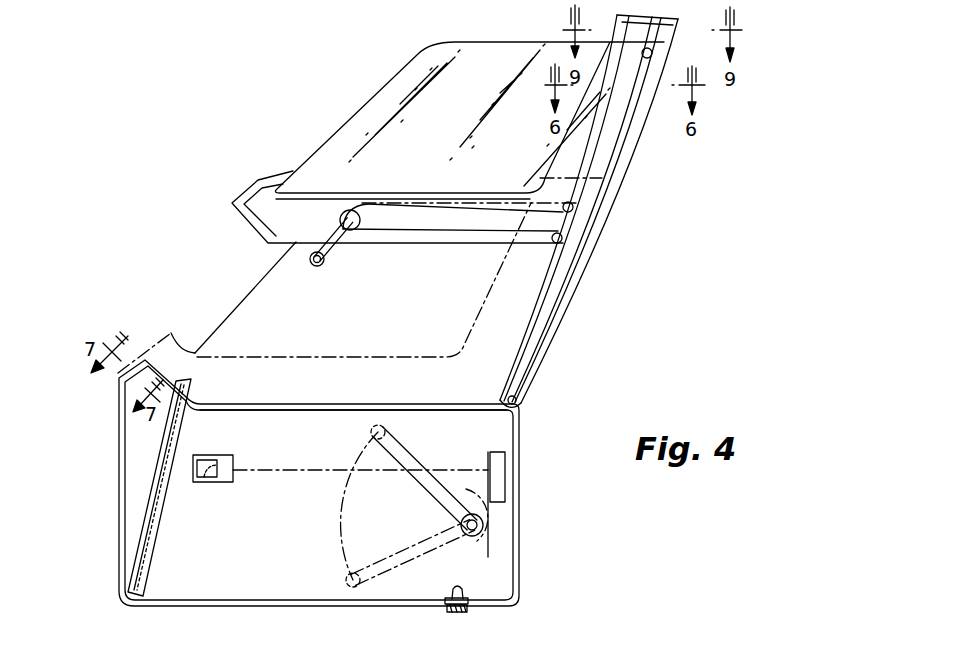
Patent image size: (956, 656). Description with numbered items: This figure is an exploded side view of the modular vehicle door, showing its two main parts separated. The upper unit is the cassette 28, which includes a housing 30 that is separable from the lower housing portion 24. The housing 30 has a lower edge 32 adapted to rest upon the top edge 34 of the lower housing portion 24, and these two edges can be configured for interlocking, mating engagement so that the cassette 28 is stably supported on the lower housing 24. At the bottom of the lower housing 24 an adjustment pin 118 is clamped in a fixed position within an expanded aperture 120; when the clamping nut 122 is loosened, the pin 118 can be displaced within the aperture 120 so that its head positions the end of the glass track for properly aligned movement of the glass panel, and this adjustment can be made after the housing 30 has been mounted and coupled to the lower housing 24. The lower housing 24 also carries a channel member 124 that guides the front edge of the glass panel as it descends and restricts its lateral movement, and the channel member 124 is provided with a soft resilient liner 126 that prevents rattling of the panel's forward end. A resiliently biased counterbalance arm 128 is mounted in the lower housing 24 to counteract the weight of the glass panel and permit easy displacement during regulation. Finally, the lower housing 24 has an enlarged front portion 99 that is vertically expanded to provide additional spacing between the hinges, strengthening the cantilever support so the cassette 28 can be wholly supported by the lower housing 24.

The lower housing portion 24 is at (331, 484).
The cassette 28 is at (622, 191).
The housing 30 is at (600, 231).
The lower edge 32 is at (434, 248).
The top edge 34 is at (302, 404).
The enlarged front portion 99 is at (118, 456).
The adjustment pin 118 is at (464, 589).
The expanded aperture 120 is at (468, 600).
The clamping nut 122 is at (463, 613).
The channel member 124 is at (132, 509).
The soft resilient liner 126 is at (143, 572).
The counterbalance arm 128 is at (488, 495).